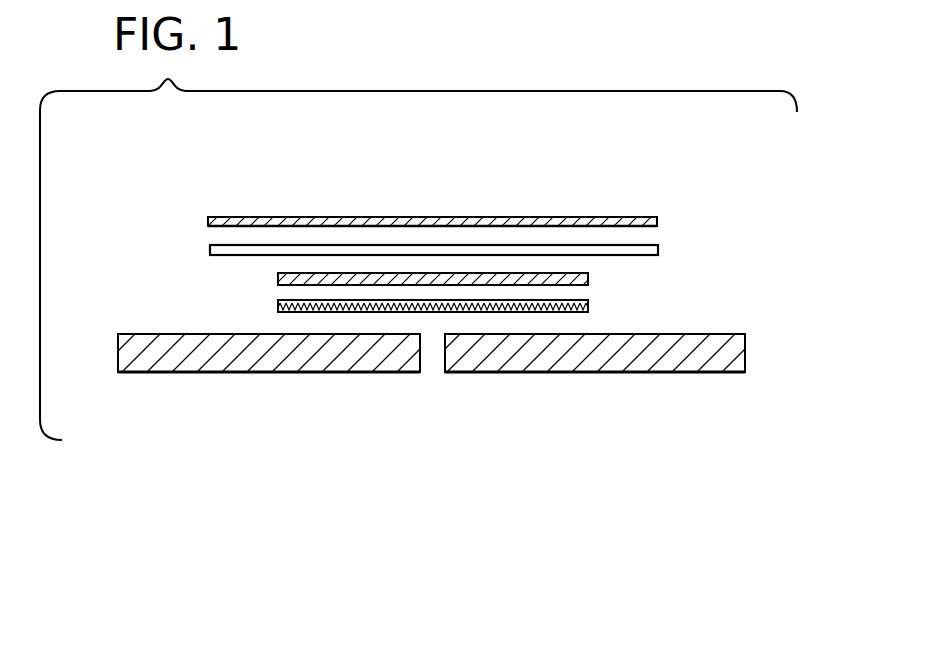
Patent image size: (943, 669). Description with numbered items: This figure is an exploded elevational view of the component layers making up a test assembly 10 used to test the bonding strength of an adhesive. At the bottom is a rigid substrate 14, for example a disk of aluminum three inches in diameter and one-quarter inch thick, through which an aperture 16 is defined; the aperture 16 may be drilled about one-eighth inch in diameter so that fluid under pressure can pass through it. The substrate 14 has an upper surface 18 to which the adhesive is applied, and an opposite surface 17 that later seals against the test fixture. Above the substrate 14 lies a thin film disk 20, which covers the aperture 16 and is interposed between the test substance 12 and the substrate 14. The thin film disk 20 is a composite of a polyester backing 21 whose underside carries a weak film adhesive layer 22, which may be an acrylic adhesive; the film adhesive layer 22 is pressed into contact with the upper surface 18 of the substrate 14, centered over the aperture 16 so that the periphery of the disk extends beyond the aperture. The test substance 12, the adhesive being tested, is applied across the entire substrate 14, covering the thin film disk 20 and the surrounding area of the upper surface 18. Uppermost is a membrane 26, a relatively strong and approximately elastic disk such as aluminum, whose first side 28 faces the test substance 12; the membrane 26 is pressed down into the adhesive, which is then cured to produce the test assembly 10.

The test assembly 10 is at (795, 162).
The test substance 12 is at (654, 243).
The rigid substrate 14 is at (487, 346).
The aperture 16 is at (443, 358).
The surface of the substrate 17 is at (640, 373).
The upper surface of the substrate 18 is at (700, 335).
The thin film disk 20 is at (410, 294).
The polyester backing 21 is at (277, 284).
The film adhesive layer 22 is at (277, 301).
The membrane 26 is at (567, 215).
The first side of the membrane 28 is at (389, 179).